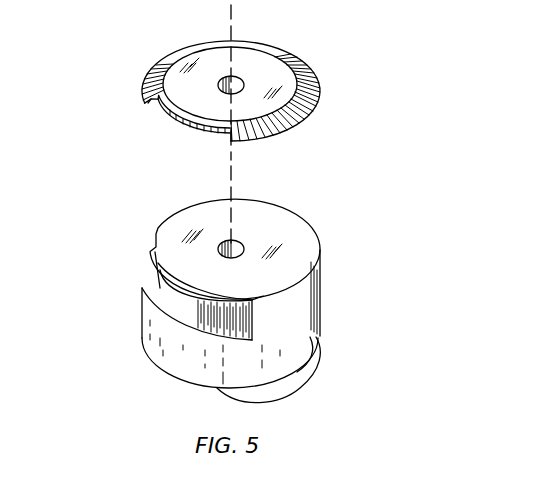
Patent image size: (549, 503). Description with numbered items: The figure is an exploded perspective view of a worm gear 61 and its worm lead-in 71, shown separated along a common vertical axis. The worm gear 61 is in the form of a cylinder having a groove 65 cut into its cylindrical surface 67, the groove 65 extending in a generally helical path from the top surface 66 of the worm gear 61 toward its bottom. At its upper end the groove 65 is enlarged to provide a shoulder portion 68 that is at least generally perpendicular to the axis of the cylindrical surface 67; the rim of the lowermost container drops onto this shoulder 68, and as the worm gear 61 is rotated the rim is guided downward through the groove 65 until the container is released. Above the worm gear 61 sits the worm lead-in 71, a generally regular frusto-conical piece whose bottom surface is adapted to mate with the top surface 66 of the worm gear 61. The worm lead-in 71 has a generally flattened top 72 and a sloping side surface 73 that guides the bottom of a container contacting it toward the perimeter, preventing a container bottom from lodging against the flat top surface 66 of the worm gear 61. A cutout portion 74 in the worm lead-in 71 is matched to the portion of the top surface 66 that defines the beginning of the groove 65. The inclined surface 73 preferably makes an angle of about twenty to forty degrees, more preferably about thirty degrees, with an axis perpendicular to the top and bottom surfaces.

The worm lead-in 71 is at (204, 96).
The flattened top 72 is at (287, 67).
The sloping side surface 73 is at (312, 97).
The cutout portion 74 is at (189, 124).
The worm gear 61 is at (248, 301).
The top surface 66 is at (307, 246).
The cylindrical surface 67 is at (163, 342).
The shoulder portion 68 is at (163, 308).
The groove 65 is at (282, 370).